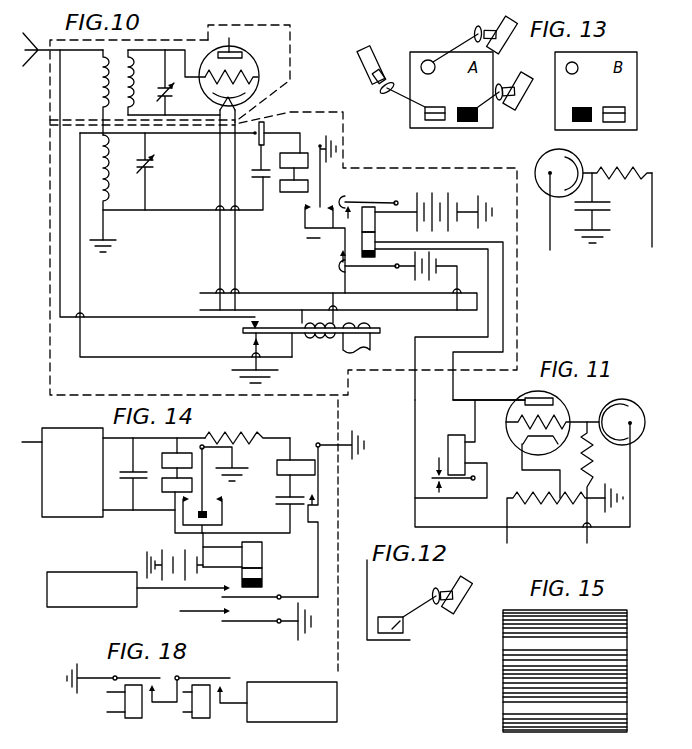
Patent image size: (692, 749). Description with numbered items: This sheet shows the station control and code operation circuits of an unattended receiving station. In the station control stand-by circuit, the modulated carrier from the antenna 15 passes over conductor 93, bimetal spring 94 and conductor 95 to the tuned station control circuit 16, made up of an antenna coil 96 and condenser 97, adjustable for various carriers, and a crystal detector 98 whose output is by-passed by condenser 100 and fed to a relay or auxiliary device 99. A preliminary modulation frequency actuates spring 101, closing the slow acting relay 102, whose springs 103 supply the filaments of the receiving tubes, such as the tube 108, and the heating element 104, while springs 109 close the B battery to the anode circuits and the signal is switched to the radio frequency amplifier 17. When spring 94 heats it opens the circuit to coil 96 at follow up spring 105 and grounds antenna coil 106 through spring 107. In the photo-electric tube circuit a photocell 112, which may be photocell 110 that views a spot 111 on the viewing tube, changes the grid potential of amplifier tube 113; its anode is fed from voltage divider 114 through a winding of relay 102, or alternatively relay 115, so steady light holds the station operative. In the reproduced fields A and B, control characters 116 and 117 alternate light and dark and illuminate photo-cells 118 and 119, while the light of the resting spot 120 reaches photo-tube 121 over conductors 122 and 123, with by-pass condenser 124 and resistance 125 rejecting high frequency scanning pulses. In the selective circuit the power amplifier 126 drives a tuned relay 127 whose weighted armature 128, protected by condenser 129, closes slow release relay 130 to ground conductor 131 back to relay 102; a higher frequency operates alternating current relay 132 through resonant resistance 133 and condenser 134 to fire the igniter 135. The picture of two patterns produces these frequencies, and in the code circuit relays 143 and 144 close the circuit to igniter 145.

In FIG. 10, the antenna 15 is at (63, 56).
In FIG. 10, the tuned station control circuit 16 is at (292, 110).
In FIG. 10, the radio frequency amplifier 17 is at (297, 72).
In FIG. 10, the conductor 93 is at (60, 248).
In FIG. 10, the bimetal spring 94 is at (263, 328).
In FIG. 10, the conductor 95 is at (80, 272).
In FIG. 10, the antenna coil 96 is at (110, 160).
In FIG. 10, the condenser 97 is at (152, 170).
In FIG. 10, the crystal detector 98 is at (265, 131).
In FIG. 10, the relay or auxiliary device 99 is at (307, 199).
In FIG. 10, the by-pass condenser 100 is at (264, 172).
In FIG. 10, the spring 101 is at (322, 197).
In FIG. 10, the slow acting relay 102 is at (376, 215).
In FIG. 10, the springs 103 is at (345, 272).
In FIG. 10, the heating element 104 is at (307, 337).
In FIG. 10, the follow up spring 105 is at (245, 319).
In FIG. 10, the antenna coil 106 is at (97, 75).
In FIG. 10, the spring 107 is at (279, 370).
In FIG. 10, the receiving tube 108 is at (251, 51).
In FIG. 10, the springs 109 is at (357, 198).
In FIG. 12, the photocell 110 is at (462, 580).
In FIG. 12, the spot 111 is at (403, 630).
In FIG. 11, the photocell 112 is at (633, 402).
In FIG. 11, the amplifier tube 113 is at (567, 405).
In FIG. 11, the voltage divider 114 is at (533, 502).
In FIG. 11, the relay 115 is at (467, 455).
In FIG. 13, the control character 116 is at (425, 120).
In FIG. 13, the control character 117 is at (478, 122).
In FIG. 13, the photo-cell 118 is at (364, 72).
In FIG. 13, the photo-cell 119 is at (518, 78).
In FIG. 13, the spot 120 is at (426, 61).
In FIG. 13, the photo-tube 121 is at (488, 18).
In FIG. 13, the conductor 122 is at (551, 248).
In FIG. 13, the conductor 123 is at (652, 247).
In FIG. 13, the by-pass condenser 124 is at (602, 210).
In FIG. 13, the resistance 125 is at (618, 182).
In FIG. 14, the power amplifier 126 is at (77, 517).
In FIG. 14, the tuned or harmonic relay 127 is at (170, 491).
In FIG. 14, the weighted or tuned armature 128 is at (205, 484).
In FIG. 14, the condenser 129 is at (133, 471).
In FIG. 14, the slow release relay 130 is at (263, 560).
In FIG. 10, the conductor 131 is at (320, 238).
In FIG. 14, the conductor 131 is at (193, 610).
In FIG. 14, the alternating current relay 132 is at (295, 458).
In FIG. 14, the resistance 133 is at (245, 437).
In FIG. 14, the condenser 134 is at (278, 502).
In FIG. 14, the igniter 135 is at (97, 607).
In FIG. 18, the relay 143 is at (125, 712).
In FIG. 18, the relay 144 is at (193, 712).
In FIG. 18, the igniter 145 is at (267, 680).